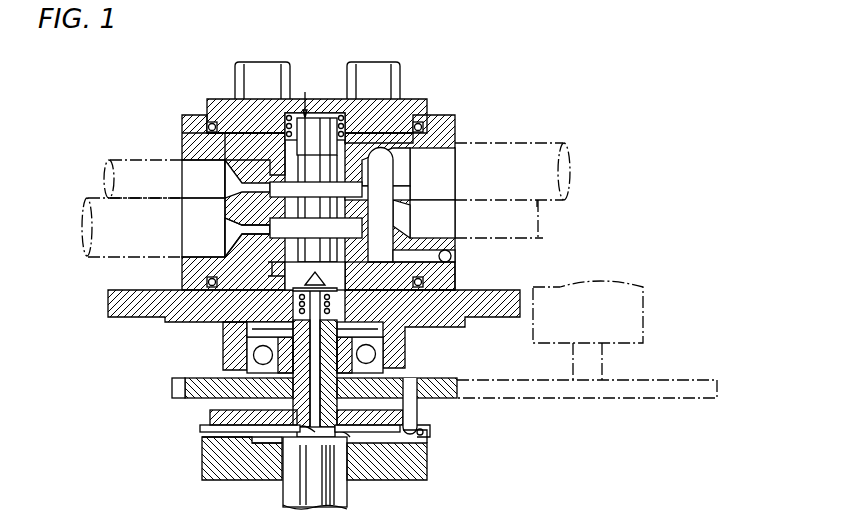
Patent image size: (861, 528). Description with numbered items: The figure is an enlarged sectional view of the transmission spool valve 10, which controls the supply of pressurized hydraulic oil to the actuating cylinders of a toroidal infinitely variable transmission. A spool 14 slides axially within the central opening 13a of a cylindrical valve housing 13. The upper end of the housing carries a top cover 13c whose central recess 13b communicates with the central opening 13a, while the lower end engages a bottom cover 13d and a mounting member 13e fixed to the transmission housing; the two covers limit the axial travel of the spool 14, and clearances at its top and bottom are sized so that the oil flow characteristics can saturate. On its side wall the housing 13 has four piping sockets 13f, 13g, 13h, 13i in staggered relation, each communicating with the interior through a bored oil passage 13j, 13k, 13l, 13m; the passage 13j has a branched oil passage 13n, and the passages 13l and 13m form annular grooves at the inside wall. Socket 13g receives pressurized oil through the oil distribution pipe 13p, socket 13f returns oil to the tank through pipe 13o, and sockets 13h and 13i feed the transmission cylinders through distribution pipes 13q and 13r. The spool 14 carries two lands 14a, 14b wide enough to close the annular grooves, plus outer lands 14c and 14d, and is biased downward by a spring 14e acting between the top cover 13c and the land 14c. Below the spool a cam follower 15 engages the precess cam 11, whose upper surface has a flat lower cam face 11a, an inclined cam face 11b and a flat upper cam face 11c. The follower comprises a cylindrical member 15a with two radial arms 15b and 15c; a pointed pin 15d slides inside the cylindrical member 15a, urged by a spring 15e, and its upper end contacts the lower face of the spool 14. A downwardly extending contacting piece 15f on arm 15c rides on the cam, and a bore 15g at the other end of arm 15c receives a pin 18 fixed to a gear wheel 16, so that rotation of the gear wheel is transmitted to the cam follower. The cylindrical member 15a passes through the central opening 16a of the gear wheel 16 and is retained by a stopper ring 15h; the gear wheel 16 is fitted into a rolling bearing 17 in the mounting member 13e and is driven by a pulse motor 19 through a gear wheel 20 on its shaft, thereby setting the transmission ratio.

The transmission spool valve 10 is at (234, 80).
The precess cam 11 is at (220, 478).
The lower cam face 11a is at (425, 445).
The inclined cam face 11b is at (247, 437).
The upper cam face 11c is at (250, 425).
The valve housing 13 is at (328, 203).
The central opening 13a is at (367, 135).
The recess 13b is at (315, 145).
The top cover 13c is at (215, 99).
The bottom cover 13d is at (415, 304).
The mounting member 13e is at (497, 317).
The piping socket 13f is at (442, 162).
The piping socket 13g is at (442, 220).
The piping socket 13h is at (192, 188).
The piping socket 13i is at (192, 221).
The oil passage 13j is at (440, 130).
The oil passage 13k is at (410, 189).
The oil passage 13l is at (240, 190).
The oil passage 13m is at (238, 228).
The branched oil passage 13n is at (455, 257).
The oil distribution pipe 13o is at (566, 140).
The oil distribution pipe 13p is at (548, 236).
The distribution pipe 13q is at (108, 160).
The distribution pipe 13r is at (86, 208).
The spool 14 is at (297, 163).
The land 14a is at (300, 186).
The land 14b is at (300, 232).
The land 14c is at (340, 112).
The land 14d is at (455, 280).
The spring 14e is at (264, 66).
The cam follower 15 is at (416, 422).
The cylindrical member 15a is at (360, 445).
The arm 15b is at (248, 437).
The arm 15c is at (380, 428).
The pin 15d is at (310, 432).
The spring 15e is at (298, 310).
The contacting piece 15f is at (218, 423).
The bore 15g is at (425, 432).
The stopper ring 15h is at (275, 342).
The gear wheel 16 is at (175, 388).
The central opening 16a is at (297, 402).
The rolling bearing 17 is at (250, 358).
The pin 18 is at (412, 405).
The pulse motor 19 is at (630, 282).
The gear wheel 20 is at (645, 400).